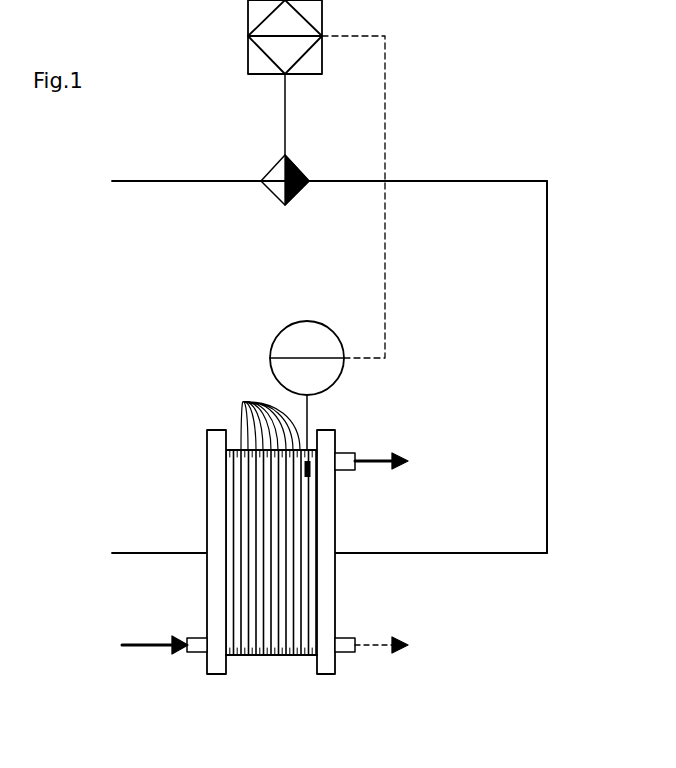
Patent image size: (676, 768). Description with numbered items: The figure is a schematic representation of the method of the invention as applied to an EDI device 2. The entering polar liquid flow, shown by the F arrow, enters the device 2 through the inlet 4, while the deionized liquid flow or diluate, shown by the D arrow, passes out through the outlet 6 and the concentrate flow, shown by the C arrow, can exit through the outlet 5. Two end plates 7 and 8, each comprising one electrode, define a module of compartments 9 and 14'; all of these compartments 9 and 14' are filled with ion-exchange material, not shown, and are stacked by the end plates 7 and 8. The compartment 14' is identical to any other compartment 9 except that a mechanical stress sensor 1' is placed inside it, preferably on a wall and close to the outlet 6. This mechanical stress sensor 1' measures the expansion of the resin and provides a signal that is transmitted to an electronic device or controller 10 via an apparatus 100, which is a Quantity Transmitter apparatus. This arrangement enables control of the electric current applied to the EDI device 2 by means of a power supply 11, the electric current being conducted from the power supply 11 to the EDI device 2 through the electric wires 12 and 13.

The mechanical stress sensor 1' is at (337, 505).
The EDI device 2 is at (194, 396).
The inlet 4 is at (194, 638).
The outlet 5 is at (349, 638).
The outlet 6 is at (348, 470).
The end plate 7 is at (207, 486).
The end plate 8 is at (335, 433).
The compartments 9 is at (243, 402).
The electronic device or controller 10 is at (248, 36).
The power supply 11 is at (300, 191).
The electric wire 12 is at (112, 280).
The electric wire 13 is at (547, 235).
The compartment 14' is at (271, 676).
The Quantity Transmitter apparatus 100 is at (283, 330).